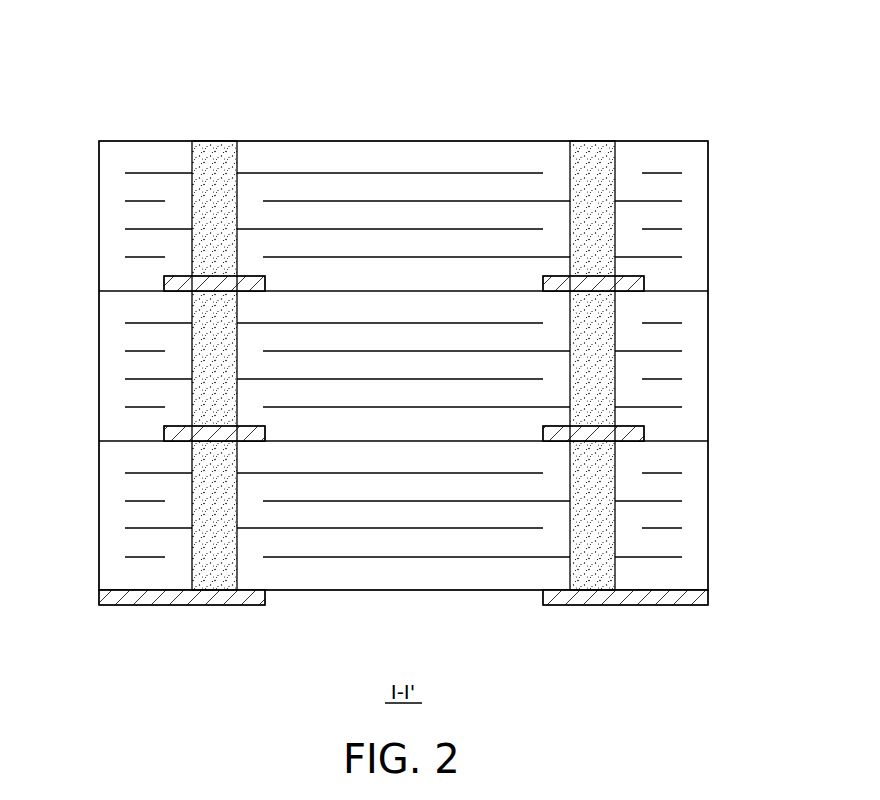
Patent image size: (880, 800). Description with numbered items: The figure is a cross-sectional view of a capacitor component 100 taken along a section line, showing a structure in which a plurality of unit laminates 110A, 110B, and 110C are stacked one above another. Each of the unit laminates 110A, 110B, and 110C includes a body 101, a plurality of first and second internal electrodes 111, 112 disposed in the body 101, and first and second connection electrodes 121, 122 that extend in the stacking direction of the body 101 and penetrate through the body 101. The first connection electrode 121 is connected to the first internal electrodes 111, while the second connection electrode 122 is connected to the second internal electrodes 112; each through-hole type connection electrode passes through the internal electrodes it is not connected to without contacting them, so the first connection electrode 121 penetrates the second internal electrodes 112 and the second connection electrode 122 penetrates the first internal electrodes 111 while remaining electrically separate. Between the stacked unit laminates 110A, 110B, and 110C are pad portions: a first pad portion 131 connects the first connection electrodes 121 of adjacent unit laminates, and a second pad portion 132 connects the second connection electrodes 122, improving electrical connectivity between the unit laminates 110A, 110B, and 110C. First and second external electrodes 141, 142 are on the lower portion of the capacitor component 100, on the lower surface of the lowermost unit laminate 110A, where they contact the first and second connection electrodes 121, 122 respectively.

The capacitor component 100 is at (458, 24).
The body 101 is at (465, 152).
The unit laminate 110A is at (721, 441).
The unit laminate 110B is at (721, 291).
The unit laminate 110C is at (721, 141).
The first internal electrode 111 is at (133, 172).
The second internal electrode 112 is at (133, 200).
The first connection electrode 121 is at (214, 148).
The second connection electrode 122 is at (594, 148).
The first pad portion 131 is at (166, 287).
The second pad portion 132 is at (621, 276).
The first external electrode 141 is at (165, 606).
The second external electrode 142 is at (654, 606).